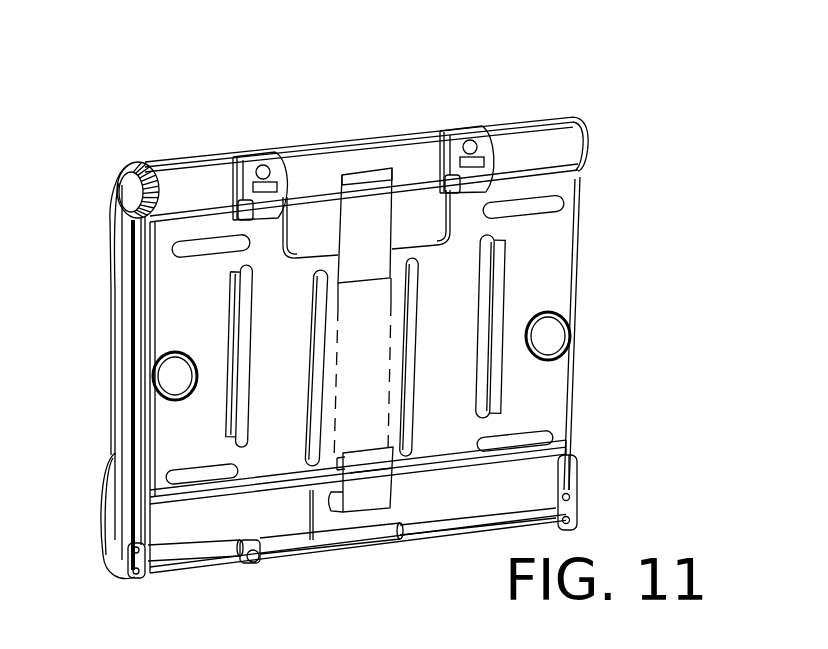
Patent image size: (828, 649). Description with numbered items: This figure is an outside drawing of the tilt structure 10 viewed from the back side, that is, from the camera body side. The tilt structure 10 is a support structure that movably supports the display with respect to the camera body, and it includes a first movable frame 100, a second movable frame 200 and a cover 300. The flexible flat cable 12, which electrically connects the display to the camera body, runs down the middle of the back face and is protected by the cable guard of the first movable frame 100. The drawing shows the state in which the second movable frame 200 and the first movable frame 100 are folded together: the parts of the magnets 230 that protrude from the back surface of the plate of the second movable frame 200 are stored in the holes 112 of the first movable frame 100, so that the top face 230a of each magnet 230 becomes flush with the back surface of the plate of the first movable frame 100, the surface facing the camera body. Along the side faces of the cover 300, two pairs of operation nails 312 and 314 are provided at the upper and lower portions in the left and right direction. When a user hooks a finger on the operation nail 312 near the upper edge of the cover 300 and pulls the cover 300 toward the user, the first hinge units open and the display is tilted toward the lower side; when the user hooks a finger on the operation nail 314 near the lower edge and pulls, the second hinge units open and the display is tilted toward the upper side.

The tilt structure 10 is at (595, 77).
The flexible flat cable 12 is at (370, 205).
The first movable frame 100 is at (560, 243).
The hole 112 is at (556, 348).
The second movable frame 200 is at (127, 332).
The magnet 230 is at (630, 317).
The top face 230a is at (560, 333).
The cover 300 is at (112, 376).
The operation nail 312 is at (110, 233).
The operation nail 314 is at (103, 497).